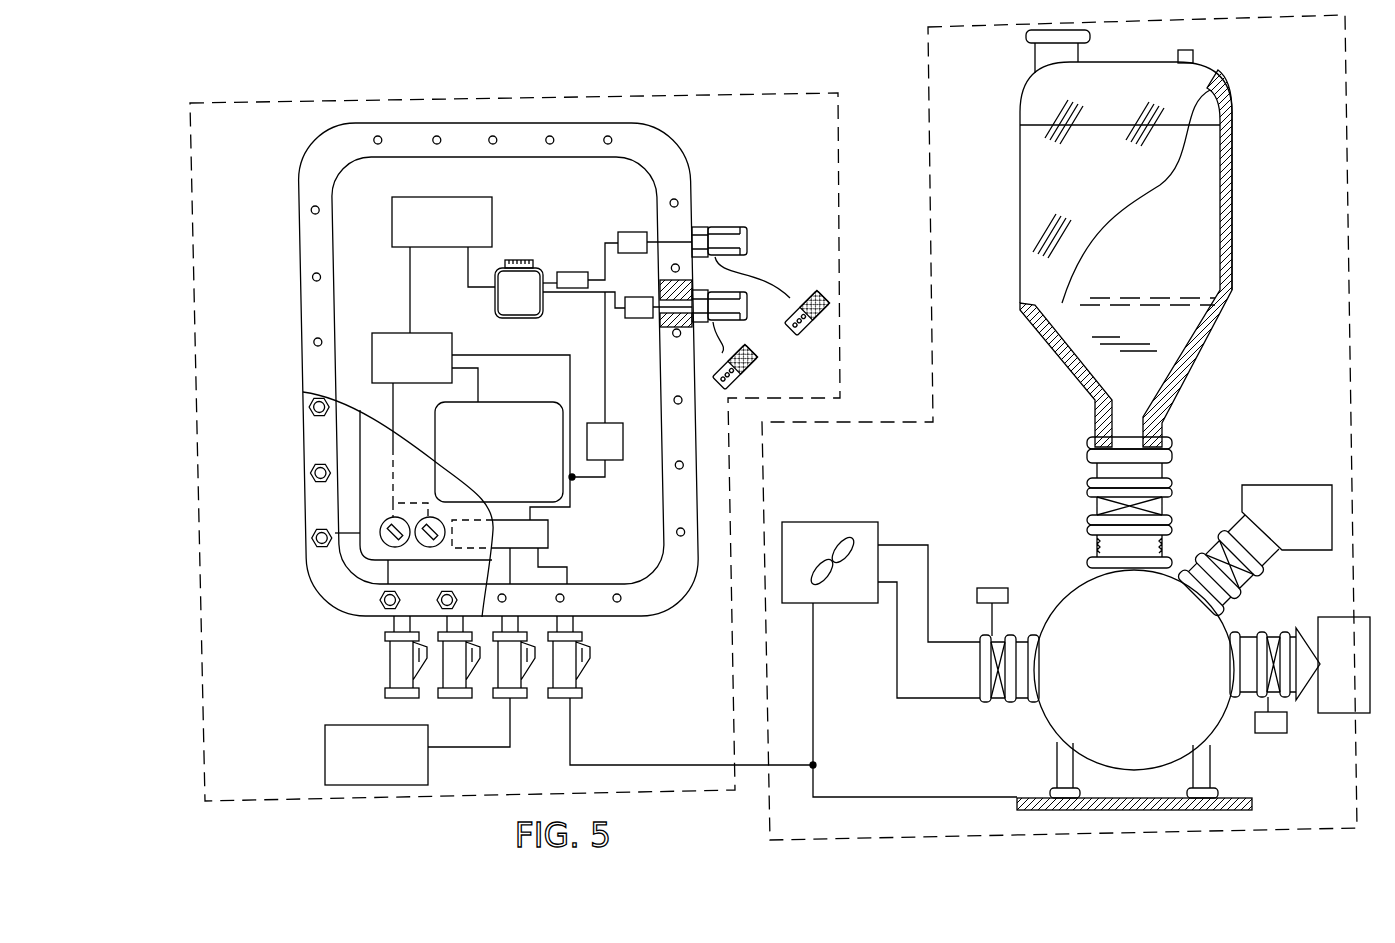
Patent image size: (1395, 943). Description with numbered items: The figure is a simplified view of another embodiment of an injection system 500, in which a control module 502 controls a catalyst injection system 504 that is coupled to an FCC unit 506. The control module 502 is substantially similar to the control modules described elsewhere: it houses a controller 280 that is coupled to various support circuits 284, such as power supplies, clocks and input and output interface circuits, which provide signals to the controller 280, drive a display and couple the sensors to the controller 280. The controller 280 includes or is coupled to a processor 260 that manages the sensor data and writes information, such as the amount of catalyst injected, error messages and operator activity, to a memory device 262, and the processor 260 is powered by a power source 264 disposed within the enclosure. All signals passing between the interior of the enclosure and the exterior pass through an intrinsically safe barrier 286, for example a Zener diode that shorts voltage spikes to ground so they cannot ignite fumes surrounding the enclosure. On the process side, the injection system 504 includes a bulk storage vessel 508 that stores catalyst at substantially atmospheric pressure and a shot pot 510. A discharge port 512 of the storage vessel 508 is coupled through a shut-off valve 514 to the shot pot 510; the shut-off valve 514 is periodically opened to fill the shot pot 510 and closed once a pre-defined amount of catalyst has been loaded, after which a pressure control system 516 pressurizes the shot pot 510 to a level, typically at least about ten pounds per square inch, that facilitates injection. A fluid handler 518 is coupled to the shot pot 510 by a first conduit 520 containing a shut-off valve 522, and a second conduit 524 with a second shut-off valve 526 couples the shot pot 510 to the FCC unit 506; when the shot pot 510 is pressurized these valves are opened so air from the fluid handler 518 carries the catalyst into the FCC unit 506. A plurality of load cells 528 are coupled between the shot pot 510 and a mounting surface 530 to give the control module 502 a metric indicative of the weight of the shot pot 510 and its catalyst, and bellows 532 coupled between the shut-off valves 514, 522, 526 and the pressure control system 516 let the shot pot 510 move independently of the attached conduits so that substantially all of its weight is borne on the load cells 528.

The injection system 500 is at (462, 78).
The control module 502 is at (540, 93).
The catalyst injection system 504 is at (928, 220).
The FCC unit 506 is at (1328, 677).
The bulk storage vessel 508 is at (1237, 183).
The shot pot 510 is at (1040, 598).
The discharge port 512 is at (1172, 426).
The shut-off valve 514 is at (1172, 505).
The pressure control system 516 is at (1283, 485).
The fluid handler 518 is at (816, 522).
The first conduit 520 is at (950, 700).
The shut-off valve 522 is at (990, 588).
The second conduit 524 is at (1287, 702).
The second shut-off valve 526 is at (1265, 633).
The load cells 528 is at (1087, 793).
The mounting surface 530 is at (1250, 782).
The bellows 532 is at (1092, 546).
The processor 260 is at (518, 300).
The memory device 262 is at (514, 262).
The power source 264 is at (613, 440).
The controller 280 is at (418, 197).
The support circuits 284 is at (420, 345).
The intrinsically safe barrier 286 is at (632, 232).